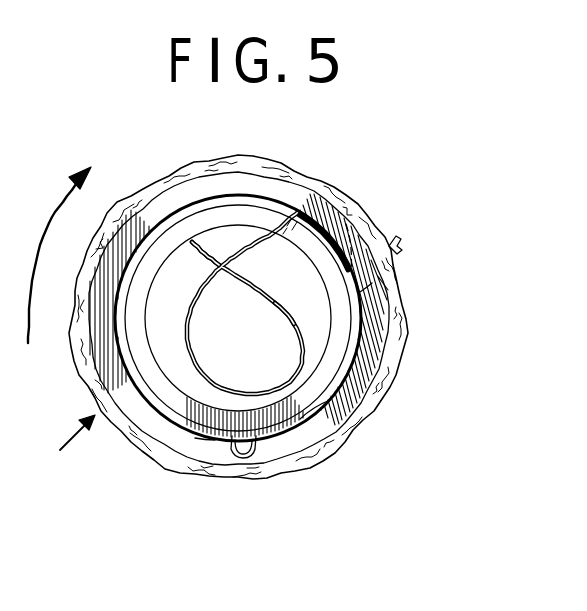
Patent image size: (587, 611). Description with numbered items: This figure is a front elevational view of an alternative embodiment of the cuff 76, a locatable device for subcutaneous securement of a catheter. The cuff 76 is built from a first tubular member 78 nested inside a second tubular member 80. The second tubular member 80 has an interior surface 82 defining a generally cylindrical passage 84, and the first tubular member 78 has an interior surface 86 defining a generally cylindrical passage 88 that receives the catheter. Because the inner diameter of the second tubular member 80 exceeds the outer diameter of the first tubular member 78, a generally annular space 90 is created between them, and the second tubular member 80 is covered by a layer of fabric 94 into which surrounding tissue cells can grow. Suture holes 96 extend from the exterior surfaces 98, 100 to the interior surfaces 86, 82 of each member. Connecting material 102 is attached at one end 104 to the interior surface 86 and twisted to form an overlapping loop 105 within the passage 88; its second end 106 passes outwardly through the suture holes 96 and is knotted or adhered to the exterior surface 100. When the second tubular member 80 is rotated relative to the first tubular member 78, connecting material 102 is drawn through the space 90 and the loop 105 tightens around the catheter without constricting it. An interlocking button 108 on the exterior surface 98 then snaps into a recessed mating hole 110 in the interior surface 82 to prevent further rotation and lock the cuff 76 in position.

The cuff 76 is at (61, 327).
The first tubular member 78 is at (292, 415).
The second tubular member 80 is at (352, 440).
The interior surface 82 is at (392, 345).
The passage 84 is at (337, 387).
The interior surface 86 is at (205, 445).
The passage 88 is at (178, 371).
The space 90 is at (352, 290).
The layer of fabric 94 is at (357, 230).
The suture hole 96 is at (256, 168).
The exterior surface 98 is at (205, 445).
The exterior surface 100 is at (395, 382).
The connecting material 102 is at (184, 349).
The end 104 is at (193, 244).
The loop 105 is at (289, 312).
The second end 106 is at (403, 250).
The interlocking button 108 is at (258, 455).
The recessed mating hole 110 is at (243, 459).